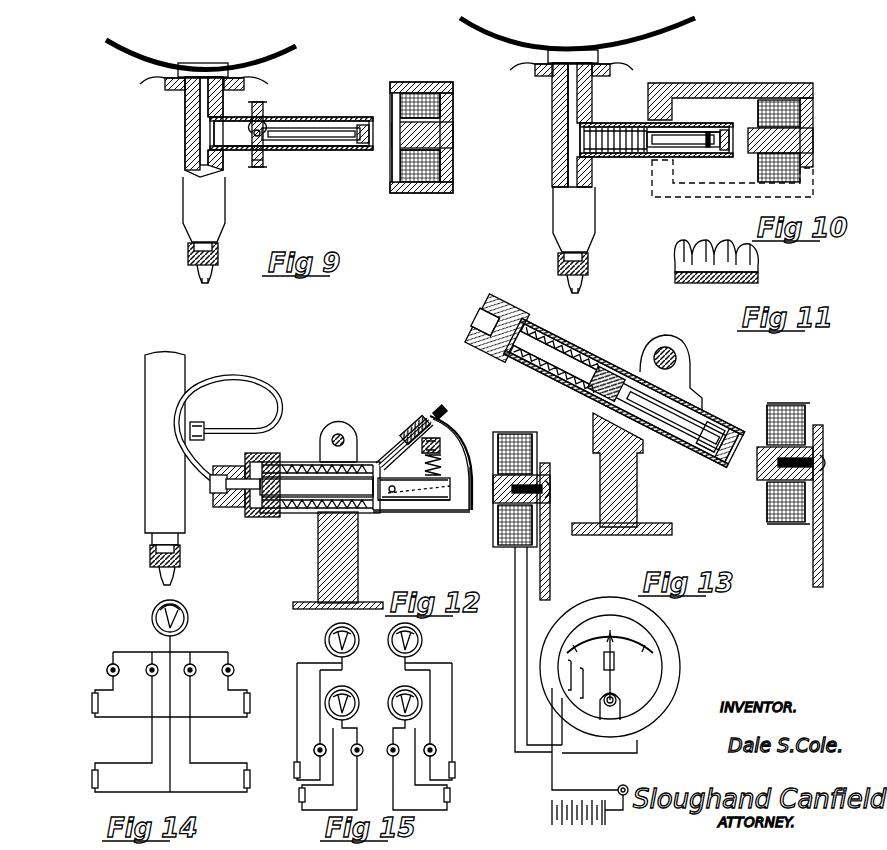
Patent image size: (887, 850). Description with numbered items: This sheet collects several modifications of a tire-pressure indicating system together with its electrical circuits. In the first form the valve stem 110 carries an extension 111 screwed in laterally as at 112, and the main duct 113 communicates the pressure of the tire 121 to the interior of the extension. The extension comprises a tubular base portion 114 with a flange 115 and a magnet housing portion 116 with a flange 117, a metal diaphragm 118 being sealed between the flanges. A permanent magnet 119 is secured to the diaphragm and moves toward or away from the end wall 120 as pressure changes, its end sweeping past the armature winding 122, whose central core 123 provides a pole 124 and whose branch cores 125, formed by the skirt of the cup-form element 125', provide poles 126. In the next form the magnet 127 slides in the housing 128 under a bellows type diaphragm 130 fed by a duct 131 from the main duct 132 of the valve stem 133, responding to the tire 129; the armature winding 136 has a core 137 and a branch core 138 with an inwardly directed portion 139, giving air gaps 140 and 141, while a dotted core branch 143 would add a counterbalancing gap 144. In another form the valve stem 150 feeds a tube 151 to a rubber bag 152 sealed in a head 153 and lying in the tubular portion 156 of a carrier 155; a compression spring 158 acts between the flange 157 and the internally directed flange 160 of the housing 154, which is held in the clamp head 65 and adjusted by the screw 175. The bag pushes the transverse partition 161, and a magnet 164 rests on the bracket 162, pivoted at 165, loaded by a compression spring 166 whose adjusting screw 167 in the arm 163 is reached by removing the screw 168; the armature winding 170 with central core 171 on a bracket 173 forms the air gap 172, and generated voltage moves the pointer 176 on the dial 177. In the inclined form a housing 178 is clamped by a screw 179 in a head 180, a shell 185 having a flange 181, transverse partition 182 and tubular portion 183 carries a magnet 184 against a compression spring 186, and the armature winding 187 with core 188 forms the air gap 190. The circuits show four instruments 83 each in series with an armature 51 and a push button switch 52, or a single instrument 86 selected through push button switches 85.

In FIG. 9, the tire 121 is at (283, 58).
In FIG. 9, the main duct 113 is at (200, 108).
In FIG. 9, the valve stem 110 is at (185, 140).
In FIG. 9, the screwed connection 112 is at (218, 170).
In FIG. 9, the extension 111 is at (280, 116).
In FIG. 9, the base portion 114 is at (236, 120).
In FIG. 9, the diaphragm 118 is at (262, 103).
In FIG. 9, the flange 115 is at (254, 152).
In FIG. 9, the flange 117 is at (265, 156).
In FIG. 9, the magnet housing portion 116 is at (288, 152).
In FIG. 9, the permanent magnet 119 is at (312, 125).
In FIG. 9, the end wall 120 is at (372, 125).
In FIG. 9, the armature winding 122 is at (422, 193).
In FIG. 9, the central core 123 is at (453, 131).
In FIG. 9, the branch cores 125 is at (416, 86).
In FIG. 9, the cup-form element 125' is at (413, 143).
In FIG. 9, the pole 124 is at (392, 170).
In FIG. 9, the poles 126 is at (394, 90).
In FIG. 10, the tire 129 is at (650, 35).
In FIG. 10, the main duct 132 is at (568, 115).
In FIG. 10, the duct 131 is at (568, 137).
In FIG. 10, the valve stem 133 is at (555, 175).
In FIG. 10, the bellows type diaphragm 130 is at (612, 125).
In FIG. 11, the bellows type diaphragm 130 is at (680, 253).
In FIG. 10, the air gap 141 is at (648, 125).
In FIG. 10, the magnet 127 is at (693, 133).
In FIG. 10, the inwardly directed portion 139 is at (672, 118).
In FIG. 10, the air gap 144 is at (668, 156).
In FIG. 10, the air gap 140 is at (736, 145).
In FIG. 10, the housing 128 is at (630, 158).
In FIG. 11, the housing 128 is at (712, 284).
In FIG. 10, the branch core 138 is at (738, 83).
In FIG. 10, the armature winding 136 is at (813, 110).
In FIG. 10, the core 137 is at (800, 140).
In FIG. 10, the core branch 143 is at (682, 200).
In FIG. 12, the valve stem 150 is at (145, 432).
In FIG. 12, the tube 151 is at (278, 405).
In FIG. 12, the rubber bag 152 is at (296, 512).
In FIG. 13, the rubber bag 152 is at (636, 369).
In FIG. 12, the head 153 is at (258, 455).
In FIG. 12, the tubular portion 156 is at (310, 515).
In FIG. 13, the tubular portion 156 is at (574, 332).
In FIG. 12, the transverse partition 161 is at (372, 487).
In FIG. 12, the screw 175 is at (345, 432).
In FIG. 12, the flange 157 is at (300, 455).
In FIG. 12, the clamp head 65 is at (358, 565).
In FIG. 12, the compression spring 158 is at (367, 512).
In FIG. 12, the housing 154 is at (384, 512).
In FIG. 12, the internally directed flange 160 is at (383, 460).
In FIG. 12, the compression spring 166 is at (446, 428).
In FIG. 12, the arm 163 is at (400, 428).
In FIG. 12, the screw 168 is at (439, 407).
In FIG. 12, the adjusting screw 167 is at (438, 436).
In FIG. 12, the magnet 164 is at (445, 470).
In FIG. 12, the pivot 165 is at (395, 505).
In FIG. 12, the bracket 162 is at (440, 505).
In FIG. 12, the carrier 155 is at (420, 512).
In FIG. 12, the air gap 172 is at (480, 495).
In FIG. 12, the central core 171 is at (492, 485).
In FIG. 12, the bracket 173 is at (550, 578).
In FIG. 12, the armature winding 170 is at (515, 560).
In FIG. 12, the dial 177 is at (657, 660).
In FIG. 12, the pointer 176 is at (614, 665).
In FIG. 13, the head 180 is at (637, 485).
In FIG. 13, the screw 179 is at (678, 360).
In FIG. 13, the flange 181 is at (523, 317).
In FIG. 13, the transverse partition 182 is at (632, 363).
In FIG. 13, the compression spring 186 is at (680, 359).
In FIG. 13, the housing 178 is at (711, 342).
In FIG. 13, the magnet 184 is at (727, 364).
In FIG. 13, the shell 185 is at (743, 372).
In FIG. 13, the tubular portion 183 is at (720, 416).
In FIG. 13, the armature winding 187 is at (784, 525).
In FIG. 13, the core 188 is at (758, 490).
In FIG. 13, the air gap 190 is at (745, 472).
In FIG. 14, the instrument 86 is at (188, 618).
In FIG. 14, the push button switches 85 is at (113, 676).
In FIG. 14, the armature 51 is at (92, 710).
In FIG. 15, the armature 51 is at (299, 795).
In FIG. 15, the instruments 83 is at (392, 695).
In FIG. 15, the push button switch 52 is at (318, 744).